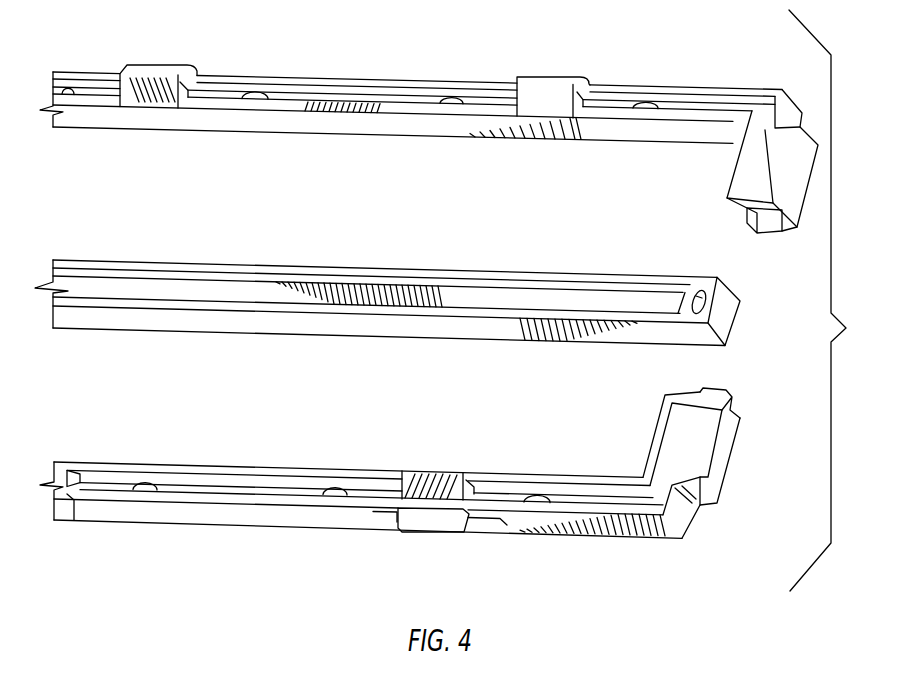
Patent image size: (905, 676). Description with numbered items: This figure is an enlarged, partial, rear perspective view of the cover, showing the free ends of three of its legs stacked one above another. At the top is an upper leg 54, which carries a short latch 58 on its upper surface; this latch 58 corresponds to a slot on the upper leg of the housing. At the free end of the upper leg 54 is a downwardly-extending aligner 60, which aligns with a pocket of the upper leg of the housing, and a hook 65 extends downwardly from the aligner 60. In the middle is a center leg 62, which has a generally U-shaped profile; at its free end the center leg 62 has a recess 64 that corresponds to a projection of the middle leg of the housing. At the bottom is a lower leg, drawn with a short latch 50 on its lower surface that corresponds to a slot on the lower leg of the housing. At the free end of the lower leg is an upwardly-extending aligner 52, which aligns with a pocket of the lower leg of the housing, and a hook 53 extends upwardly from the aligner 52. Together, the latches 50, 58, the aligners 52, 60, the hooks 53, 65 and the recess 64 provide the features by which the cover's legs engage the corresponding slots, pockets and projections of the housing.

The short latch 50 is at (437, 528).
The upwardly-extending aligner 52 is at (677, 450).
The hook 53 is at (713, 392).
The upper leg 54 is at (653, 88).
The short latch 58 is at (538, 97).
The downwardly-extending aligner 60 is at (755, 192).
The center leg 62 is at (560, 270).
The recess 64 is at (710, 305).
The hook 65 is at (752, 222).